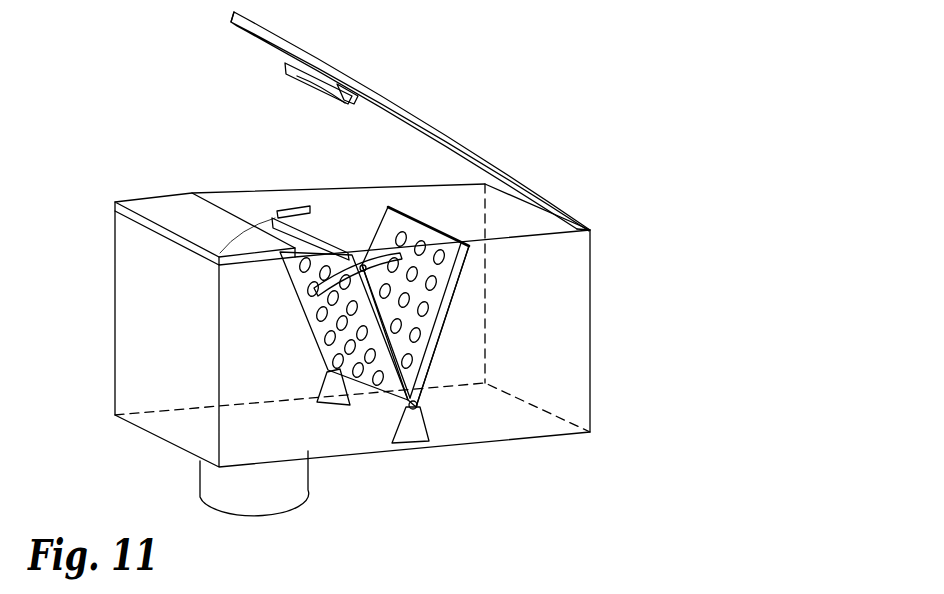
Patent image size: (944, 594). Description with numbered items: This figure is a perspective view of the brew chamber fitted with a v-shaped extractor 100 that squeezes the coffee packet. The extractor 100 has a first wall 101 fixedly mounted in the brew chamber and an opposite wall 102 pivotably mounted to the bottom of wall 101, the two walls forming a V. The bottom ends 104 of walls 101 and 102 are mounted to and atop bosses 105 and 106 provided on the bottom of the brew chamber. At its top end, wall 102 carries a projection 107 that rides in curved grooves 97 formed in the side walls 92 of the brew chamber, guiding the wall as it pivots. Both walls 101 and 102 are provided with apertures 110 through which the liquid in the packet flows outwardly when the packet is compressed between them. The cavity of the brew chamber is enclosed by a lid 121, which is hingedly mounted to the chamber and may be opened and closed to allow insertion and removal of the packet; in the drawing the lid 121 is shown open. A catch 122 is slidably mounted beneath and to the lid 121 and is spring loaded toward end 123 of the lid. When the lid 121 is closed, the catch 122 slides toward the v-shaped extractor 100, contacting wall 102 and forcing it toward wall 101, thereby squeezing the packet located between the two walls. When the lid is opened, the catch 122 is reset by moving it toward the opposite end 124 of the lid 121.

The side walls 92 is at (247, 210).
The curved grooves 97 is at (295, 213).
The v-shaped extractor 100 is at (443, 212).
The first wall 101 is at (463, 288).
The opposite wall 102 is at (335, 340).
The bottom ends 104 is at (368, 380).
The boss 105 is at (332, 398).
The boss 106 is at (419, 421).
The projection 107 is at (318, 250).
The apertures 110 is at (325, 272).
The lid 121 is at (396, 106).
The catch 122 is at (350, 86).
The end of lid 123 is at (590, 229).
The end of lid 124 is at (236, 16).